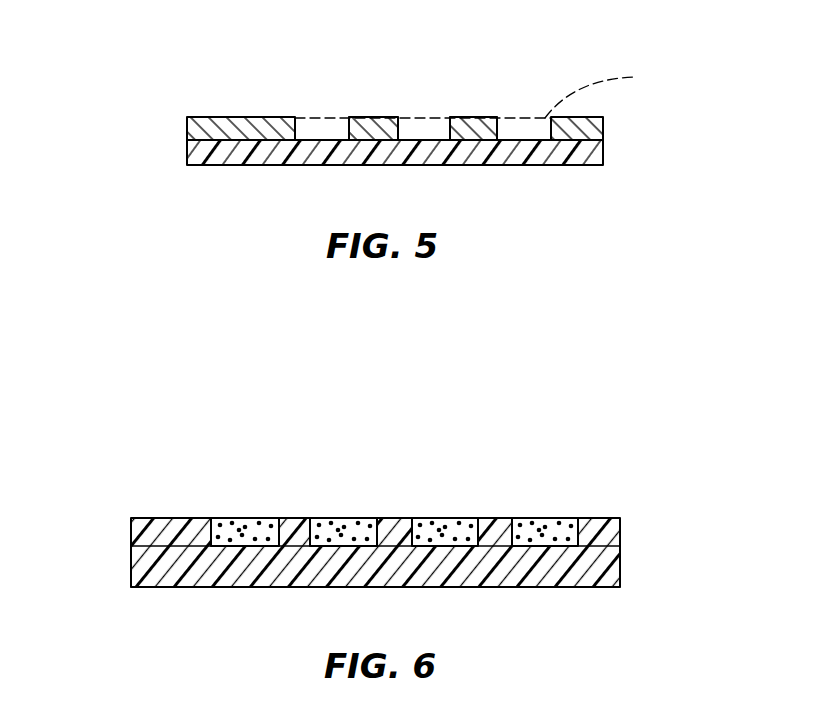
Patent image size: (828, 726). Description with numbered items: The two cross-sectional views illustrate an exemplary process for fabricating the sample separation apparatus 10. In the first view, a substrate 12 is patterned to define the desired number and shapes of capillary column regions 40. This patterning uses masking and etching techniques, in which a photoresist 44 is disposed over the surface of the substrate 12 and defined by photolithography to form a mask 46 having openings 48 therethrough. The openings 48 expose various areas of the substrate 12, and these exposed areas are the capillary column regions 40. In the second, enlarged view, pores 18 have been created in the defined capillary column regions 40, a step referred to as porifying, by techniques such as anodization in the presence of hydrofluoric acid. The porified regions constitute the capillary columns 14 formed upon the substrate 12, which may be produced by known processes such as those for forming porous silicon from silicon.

In FIG. 6, the sample separation apparatus 10 is at (370, 548).
In FIG. 5, the substrate 12 is at (185, 153).
In FIG. 6, the substrate 12 is at (610, 562).
In FIG. 6, the capillary columns 14 is at (224, 570).
In FIG. 6, the pores 18 is at (432, 529).
In FIG. 5, the capillary column regions 40 is at (517, 139).
In FIG. 6, the capillary column regions 40 is at (450, 523).
In FIG. 5, the photoresist 44 is at (577, 130).
In FIG. 5, the mask 46 is at (168, 128).
In FIG. 5, the openings 48 is at (450, 128).